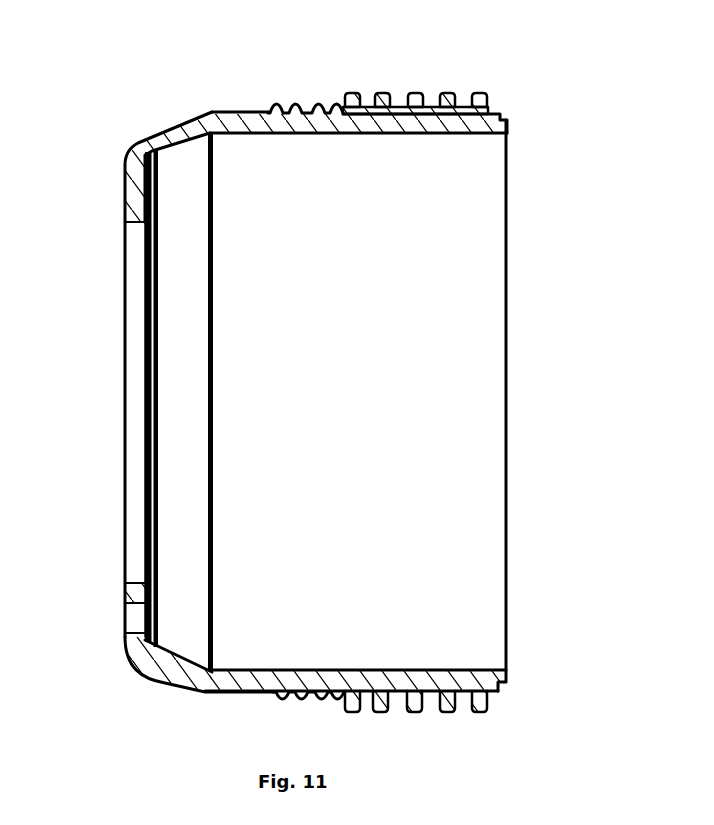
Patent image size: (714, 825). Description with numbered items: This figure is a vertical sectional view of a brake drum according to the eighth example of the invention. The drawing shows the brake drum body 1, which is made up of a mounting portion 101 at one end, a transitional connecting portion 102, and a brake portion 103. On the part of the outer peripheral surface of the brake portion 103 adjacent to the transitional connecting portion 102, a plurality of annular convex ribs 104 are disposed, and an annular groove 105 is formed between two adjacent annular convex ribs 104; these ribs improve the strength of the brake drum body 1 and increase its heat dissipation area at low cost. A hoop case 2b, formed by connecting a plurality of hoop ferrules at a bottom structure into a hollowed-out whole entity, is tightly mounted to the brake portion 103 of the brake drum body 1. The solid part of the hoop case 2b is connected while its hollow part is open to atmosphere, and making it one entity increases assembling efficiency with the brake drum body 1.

The brake drum body 1 is at (108, 463).
The mounting portion 101 is at (140, 292).
The transitional connecting portion 102 is at (180, 672).
The brake portion 103 is at (408, 678).
The annular convex rib 104 is at (292, 103).
The annular groove 105 is at (320, 101).
The hoop case 2b is at (468, 90).